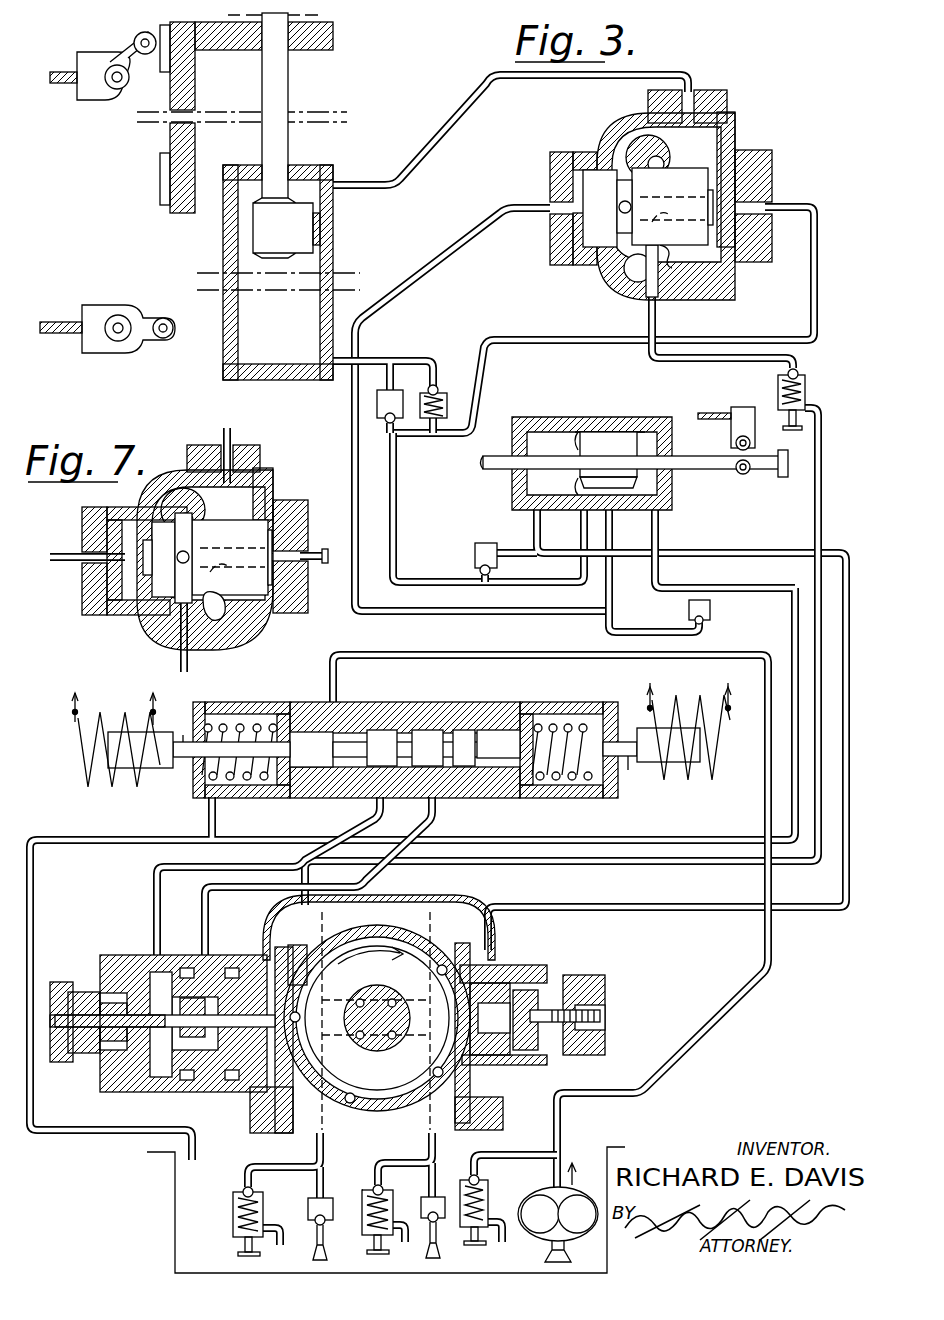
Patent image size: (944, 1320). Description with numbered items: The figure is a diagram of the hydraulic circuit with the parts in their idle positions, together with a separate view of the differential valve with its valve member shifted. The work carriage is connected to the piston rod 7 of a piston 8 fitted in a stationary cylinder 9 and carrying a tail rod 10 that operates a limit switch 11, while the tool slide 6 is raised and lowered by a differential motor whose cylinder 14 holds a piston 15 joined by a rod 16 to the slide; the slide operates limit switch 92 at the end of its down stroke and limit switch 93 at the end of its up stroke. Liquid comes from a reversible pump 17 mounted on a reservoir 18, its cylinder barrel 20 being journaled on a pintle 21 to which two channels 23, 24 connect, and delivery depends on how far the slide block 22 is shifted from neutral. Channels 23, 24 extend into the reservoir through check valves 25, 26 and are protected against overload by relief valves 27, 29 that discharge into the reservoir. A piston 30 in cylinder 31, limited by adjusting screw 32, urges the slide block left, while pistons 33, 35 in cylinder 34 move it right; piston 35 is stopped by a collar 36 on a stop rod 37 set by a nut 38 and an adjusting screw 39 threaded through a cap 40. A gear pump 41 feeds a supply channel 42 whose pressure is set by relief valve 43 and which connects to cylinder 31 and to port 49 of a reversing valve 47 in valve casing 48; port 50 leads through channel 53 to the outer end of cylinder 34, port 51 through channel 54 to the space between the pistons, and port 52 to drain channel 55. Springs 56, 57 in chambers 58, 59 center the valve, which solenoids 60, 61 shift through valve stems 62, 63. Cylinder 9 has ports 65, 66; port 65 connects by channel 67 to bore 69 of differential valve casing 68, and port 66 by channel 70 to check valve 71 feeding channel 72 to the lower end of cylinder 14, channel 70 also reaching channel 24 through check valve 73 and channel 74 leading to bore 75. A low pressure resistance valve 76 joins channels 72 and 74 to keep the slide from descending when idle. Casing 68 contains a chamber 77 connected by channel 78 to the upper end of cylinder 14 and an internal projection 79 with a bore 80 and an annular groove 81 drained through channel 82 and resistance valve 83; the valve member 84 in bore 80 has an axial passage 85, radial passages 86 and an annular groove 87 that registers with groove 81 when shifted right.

In FIG. 3, the tool slide 6 is at (195, 82).
In FIG. 3, the piston rod 7 is at (482, 464).
In FIG. 3, the piston 8 is at (608, 460).
In FIG. 3, the cylinder 9 is at (640, 428).
In FIG. 3, the tail rod 10 is at (704, 466).
In FIG. 3, the limit switch 11 is at (731, 412).
In FIG. 3, the cylinder 14 is at (333, 243).
In FIG. 3, the piston 15 is at (281, 228).
In FIG. 3, the rod 16 is at (288, 144).
In FIG. 3, the reversible pump 17 is at (655, 1008).
In FIG. 3, the reservoir 18 is at (172, 1230).
In FIG. 3, the cylinder barrel 20 is at (377, 1021).
In FIG. 3, the pintle 21 is at (377, 1018).
In FIG. 3, the slide block 22 is at (488, 958).
In FIG. 3, the channel 23 is at (658, 526).
In FIG. 3, the channel 24 is at (532, 525).
In FIG. 3, the check valve 25 is at (308, 1203).
In FIG. 3, the check valve 26 is at (424, 1198).
In FIG. 3, the relief valve 27 is at (238, 1195).
In FIG. 3, the relief valve 29 is at (366, 1192).
In FIG. 3, the piston 30 is at (503, 1015).
In FIG. 3, the cylinder 31 is at (542, 980).
In FIG. 3, the adjusting screw 32 is at (600, 1018).
In FIG. 3, the piston 33 is at (250, 955).
In FIG. 3, the cylinder 34 is at (215, 1092).
In FIG. 3, the piston 35 is at (192, 957).
In FIG. 3, the collar 36 is at (192, 1092).
In FIG. 3, the stop rod 37 is at (162, 1092).
In FIG. 3, the nut 38 is at (132, 957).
In FIG. 3, the adjusting screw 39 is at (70, 995).
In FIG. 3, the cap 40 is at (95, 1070).
In FIG. 3, the gear pump 41 is at (545, 1240).
In FIG. 3, the supply channel 42 is at (368, 666).
In FIG. 3, the relief valve 43 is at (482, 1194).
In FIG. 3, the reversing valve 47 is at (405, 749).
In FIG. 3, the valve casing 48 is at (197, 780).
In FIG. 3, the port 49 is at (333, 770).
In FIG. 3, the port 50 is at (386, 728).
In FIG. 3, the port 51 is at (432, 728).
In FIG. 3, the port 52 is at (470, 728).
In FIG. 3, the channel 53 is at (150, 874).
In FIG. 3, the channel 54 is at (203, 897).
In FIG. 3, the drain channel 55 is at (820, 460).
In FIG. 3, the spring 56 is at (242, 726).
In FIG. 3, the spring 57 is at (552, 727).
In FIG. 3, the chamber 58 is at (262, 797).
In FIG. 3, the chamber 59 is at (596, 727).
In FIG. 3, the solenoid 60 is at (135, 698).
In FIG. 3, the solenoid 61 is at (714, 696).
In FIG. 3, the valve stem 62 is at (183, 735).
In FIG. 3, the valve stem 63 is at (630, 770).
In FIG. 3, the port 65 is at (600, 428).
In FIG. 3, the port 66 is at (578, 430).
In FIG. 3, the channel 67 is at (435, 270).
In FIG. 7, the channel 67 is at (72, 565).
In FIG. 3, the differential valve casing 68 is at (548, 178).
In FIG. 7, the differential valve casing 68 is at (85, 607).
In FIG. 3, the bore 69 is at (575, 262).
In FIG. 7, the bore 69 is at (85, 527).
In FIG. 3, the channel 70 is at (446, 588).
In FIG. 3, the check valve 71 is at (375, 400).
In FIG. 3, the channel 72 is at (426, 356).
In FIG. 3, the check valve 73 is at (473, 544).
In FIG. 3, the channel 74 is at (582, 345).
In FIG. 7, the channel 74 is at (310, 555).
In FIG. 3, the bore 75 is at (724, 152).
In FIG. 7, the bore 75 is at (275, 518).
In FIG. 3, the low pressure resistance valve 76 is at (436, 392).
In FIG. 3, the chamber 77 is at (622, 128).
In FIG. 7, the chamber 77 is at (160, 498).
In FIG. 3, the channel 78 is at (455, 114).
In FIG. 7, the channel 78 is at (232, 449).
In FIG. 3, the internal projection 79 is at (645, 152).
In FIG. 7, the internal projection 79 is at (196, 508).
In FIG. 3, the bore 80 is at (663, 271).
In FIG. 7, the bore 80 is at (220, 611).
In FIG. 3, the annular groove 81 is at (666, 163).
In FIG. 7, the annular groove 81 is at (198, 518).
In FIG. 3, the channel 82 is at (656, 320).
In FIG. 7, the channel 82 is at (197, 663).
In FIG. 3, the resistance valve 83 is at (800, 386).
In FIG. 3, the valve member 84 is at (672, 206).
In FIG. 7, the valve member 84 is at (232, 557).
In FIG. 3, the axial passage 85 is at (673, 231).
In FIG. 7, the axial passage 85 is at (219, 568).
In FIG. 3, the radial passages 86 is at (628, 203).
In FIG. 7, the radial passages 86 is at (190, 555).
In FIG. 3, the annular groove 87 is at (600, 208).
In FIG. 7, the annular groove 87 is at (160, 559).
In FIG. 3, the limit switch 92 is at (98, 300).
In FIG. 3, the limit switch 93 is at (87, 95).